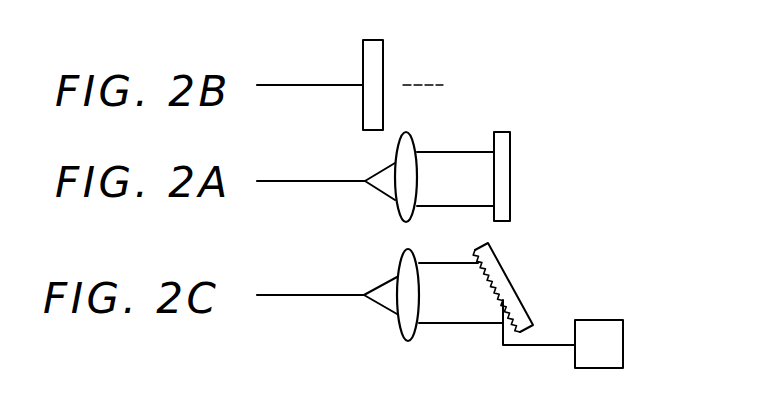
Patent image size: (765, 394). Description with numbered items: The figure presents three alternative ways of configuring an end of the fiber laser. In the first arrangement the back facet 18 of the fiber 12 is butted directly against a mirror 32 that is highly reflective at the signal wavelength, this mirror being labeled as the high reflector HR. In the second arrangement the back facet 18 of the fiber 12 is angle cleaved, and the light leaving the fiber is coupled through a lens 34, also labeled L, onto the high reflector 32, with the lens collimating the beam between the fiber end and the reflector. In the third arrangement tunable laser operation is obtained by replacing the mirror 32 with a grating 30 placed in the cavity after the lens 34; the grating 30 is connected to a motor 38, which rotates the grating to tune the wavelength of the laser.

In FIG. 2B, the fiber 12 is at (274, 85).
In FIG. 2A, the fiber 12 is at (272, 181).
In FIG. 2C, the fiber 12 is at (272, 295).
In FIG. 2B, the back facet 18 is at (363, 85).
In FIG. 2A, the back facet 18 is at (365, 181).
In FIG. 2C, the back facet 18 is at (364, 295).
In FIG. 2B, the mirror 32 is at (384, 53).
In FIG. 2A, the mirror 32 is at (511, 157).
In FIG. 2A, the lens 34 is at (411, 136).
In FIG. 2C, the lens 34 is at (415, 254).
In FIG. 2C, the diffraction grating 30 is at (527, 306).
In FIG. 2C, the motor 38 is at (563, 334).
In FIG. 2B, the high reflector HR is at (497, 126).
In FIG. 2C, the lens L is at (399, 260).